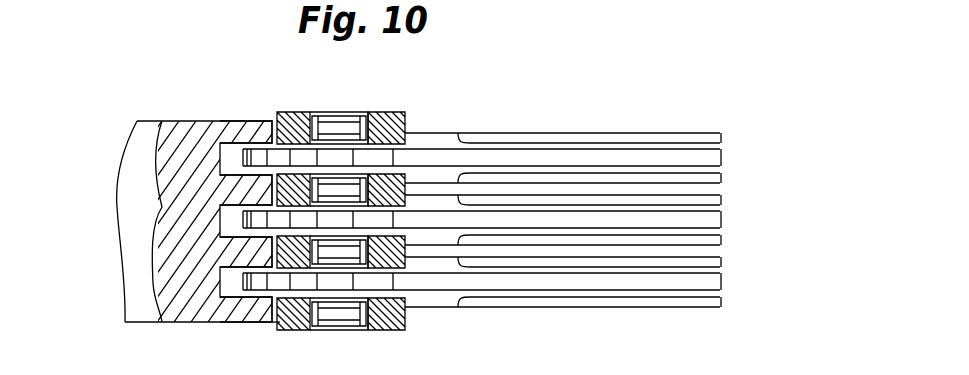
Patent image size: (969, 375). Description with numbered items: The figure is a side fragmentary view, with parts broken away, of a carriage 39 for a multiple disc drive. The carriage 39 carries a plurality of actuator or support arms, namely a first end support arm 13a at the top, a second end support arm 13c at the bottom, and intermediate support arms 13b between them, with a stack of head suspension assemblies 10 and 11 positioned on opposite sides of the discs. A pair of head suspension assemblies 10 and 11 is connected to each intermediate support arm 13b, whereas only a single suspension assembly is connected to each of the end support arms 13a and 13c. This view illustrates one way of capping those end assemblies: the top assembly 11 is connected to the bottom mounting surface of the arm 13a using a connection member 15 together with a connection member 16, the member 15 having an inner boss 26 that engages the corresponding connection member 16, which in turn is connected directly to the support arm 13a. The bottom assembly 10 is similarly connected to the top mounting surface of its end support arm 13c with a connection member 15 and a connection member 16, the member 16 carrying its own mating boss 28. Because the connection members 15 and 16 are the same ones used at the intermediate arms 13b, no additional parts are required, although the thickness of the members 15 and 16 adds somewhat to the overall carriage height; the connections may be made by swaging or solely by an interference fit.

The head suspension assembly 10 is at (450, 240).
The head suspension assembly 11 is at (452, 134).
The first end support arm 13a is at (213, 132).
The intermediate support arm 13b is at (228, 250).
The second end support arm 13c is at (240, 308).
The base plate or connection member 15 is at (293, 110).
The base plate or connection member 16 is at (405, 133).
The mating boss 26 is at (352, 115).
The mating boss 28 is at (275, 330).
The carriage 39 is at (167, 150).